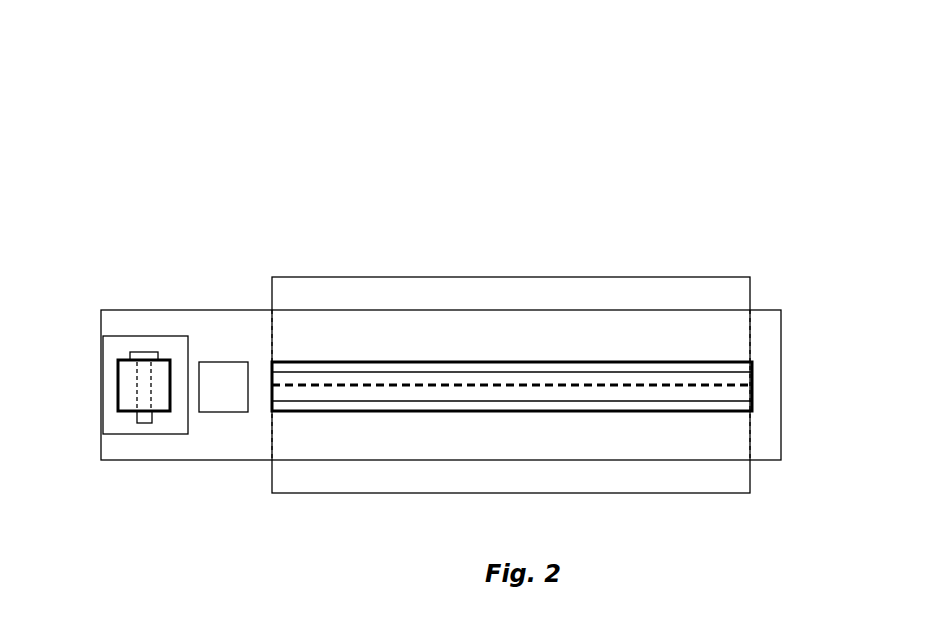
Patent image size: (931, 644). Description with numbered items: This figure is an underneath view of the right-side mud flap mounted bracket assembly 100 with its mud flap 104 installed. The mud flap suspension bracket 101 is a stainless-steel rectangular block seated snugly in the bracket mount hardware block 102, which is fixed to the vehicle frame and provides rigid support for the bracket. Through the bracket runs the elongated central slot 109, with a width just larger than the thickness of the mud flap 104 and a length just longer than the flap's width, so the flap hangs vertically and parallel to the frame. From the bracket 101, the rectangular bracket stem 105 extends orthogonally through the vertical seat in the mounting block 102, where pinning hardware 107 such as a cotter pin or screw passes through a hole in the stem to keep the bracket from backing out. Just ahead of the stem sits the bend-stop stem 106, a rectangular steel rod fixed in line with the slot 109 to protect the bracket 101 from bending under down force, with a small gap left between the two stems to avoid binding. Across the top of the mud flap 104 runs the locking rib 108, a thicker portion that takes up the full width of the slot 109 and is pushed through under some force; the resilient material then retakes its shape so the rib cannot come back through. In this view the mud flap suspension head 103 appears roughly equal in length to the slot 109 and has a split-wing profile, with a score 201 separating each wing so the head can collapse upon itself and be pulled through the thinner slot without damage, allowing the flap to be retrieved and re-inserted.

The mud flap mounted bracket assembly 100 is at (528, 142).
The mud flap suspension bracket 101 is at (202, 461).
The bracket mount hardware block 102 is at (190, 420).
The mud flap suspension head 103 is at (585, 277).
The mud flap 104 is at (652, 400).
The bracket stem 105 is at (118, 390).
The bend-stop stem 106 is at (226, 362).
The pinning hardware 107 is at (143, 352).
The locking rib 108 is at (497, 368).
The central slot 109 is at (627, 362).
The score 201 is at (483, 387).